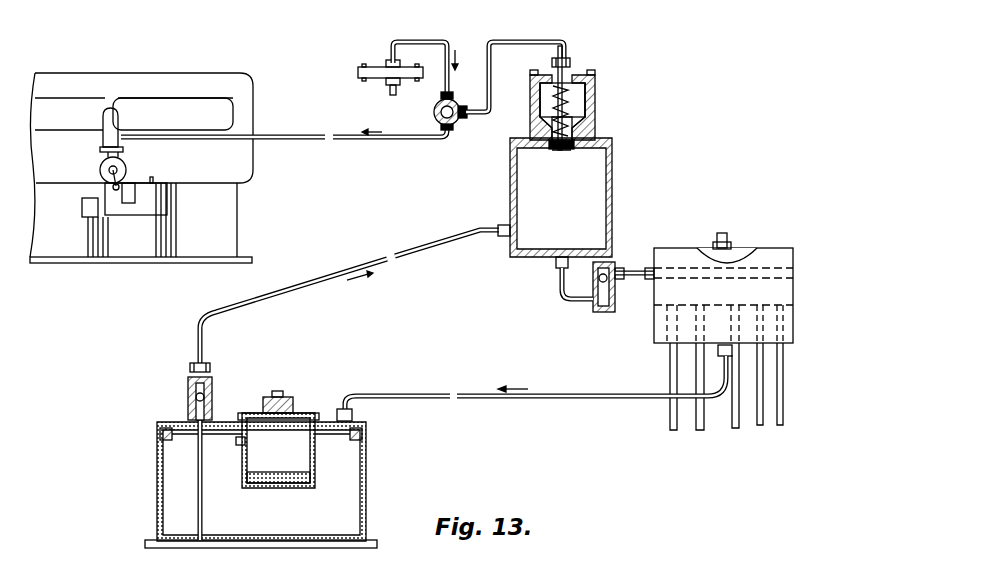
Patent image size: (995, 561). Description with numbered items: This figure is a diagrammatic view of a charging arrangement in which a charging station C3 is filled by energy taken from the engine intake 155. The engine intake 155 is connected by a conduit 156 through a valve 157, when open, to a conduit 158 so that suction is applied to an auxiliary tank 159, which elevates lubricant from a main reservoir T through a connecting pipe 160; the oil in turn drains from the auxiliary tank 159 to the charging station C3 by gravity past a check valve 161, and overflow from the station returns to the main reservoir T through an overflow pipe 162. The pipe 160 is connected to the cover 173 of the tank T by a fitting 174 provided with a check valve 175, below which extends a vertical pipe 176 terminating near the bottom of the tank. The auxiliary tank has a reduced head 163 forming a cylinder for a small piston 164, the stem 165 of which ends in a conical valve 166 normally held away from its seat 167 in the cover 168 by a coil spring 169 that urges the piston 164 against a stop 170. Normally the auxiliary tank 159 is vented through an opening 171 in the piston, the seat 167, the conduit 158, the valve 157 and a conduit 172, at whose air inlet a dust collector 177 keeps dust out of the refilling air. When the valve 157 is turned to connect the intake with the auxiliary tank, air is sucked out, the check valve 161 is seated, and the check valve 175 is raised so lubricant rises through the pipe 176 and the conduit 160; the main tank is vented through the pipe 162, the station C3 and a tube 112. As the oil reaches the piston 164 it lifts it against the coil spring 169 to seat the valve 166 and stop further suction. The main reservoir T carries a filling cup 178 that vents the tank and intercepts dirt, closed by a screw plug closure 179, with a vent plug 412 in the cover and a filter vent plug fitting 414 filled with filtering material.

The engine intake 155 is at (117, 113).
The conduit 156 is at (293, 135).
The valve 157 is at (455, 100).
The conduit 158 is at (492, 105).
The auxiliary tank 159 is at (613, 170).
The connecting pipe 160 is at (328, 282).
The check valve 161 is at (617, 291).
The overflow pipe 162 is at (612, 400).
The reduced head 163 is at (597, 94).
The piston 164 is at (558, 142).
The stem 165 is at (582, 108).
The conical valve 166 is at (571, 77).
The seat 167 is at (555, 80).
The cover 168 is at (593, 78).
The coil spring 169 is at (511, 138).
The stop 170 is at (543, 153).
The opening 171 is at (568, 150).
The conduit 172 is at (430, 38).
The cover 173 is at (220, 420).
The fitting 174 is at (188, 400).
The check valve 175 is at (213, 378).
The vertical pipe 176 is at (203, 446).
The dust collector 177 is at (358, 71).
The filling cup 178 is at (320, 450).
The screw plug closure 179 is at (300, 394).
The vent plug 412 is at (286, 391).
The filter vent plug fitting 414 is at (246, 441).
The tube 112 is at (725, 234).
The charging station C3 is at (742, 339).
The main reservoir T is at (366, 494).